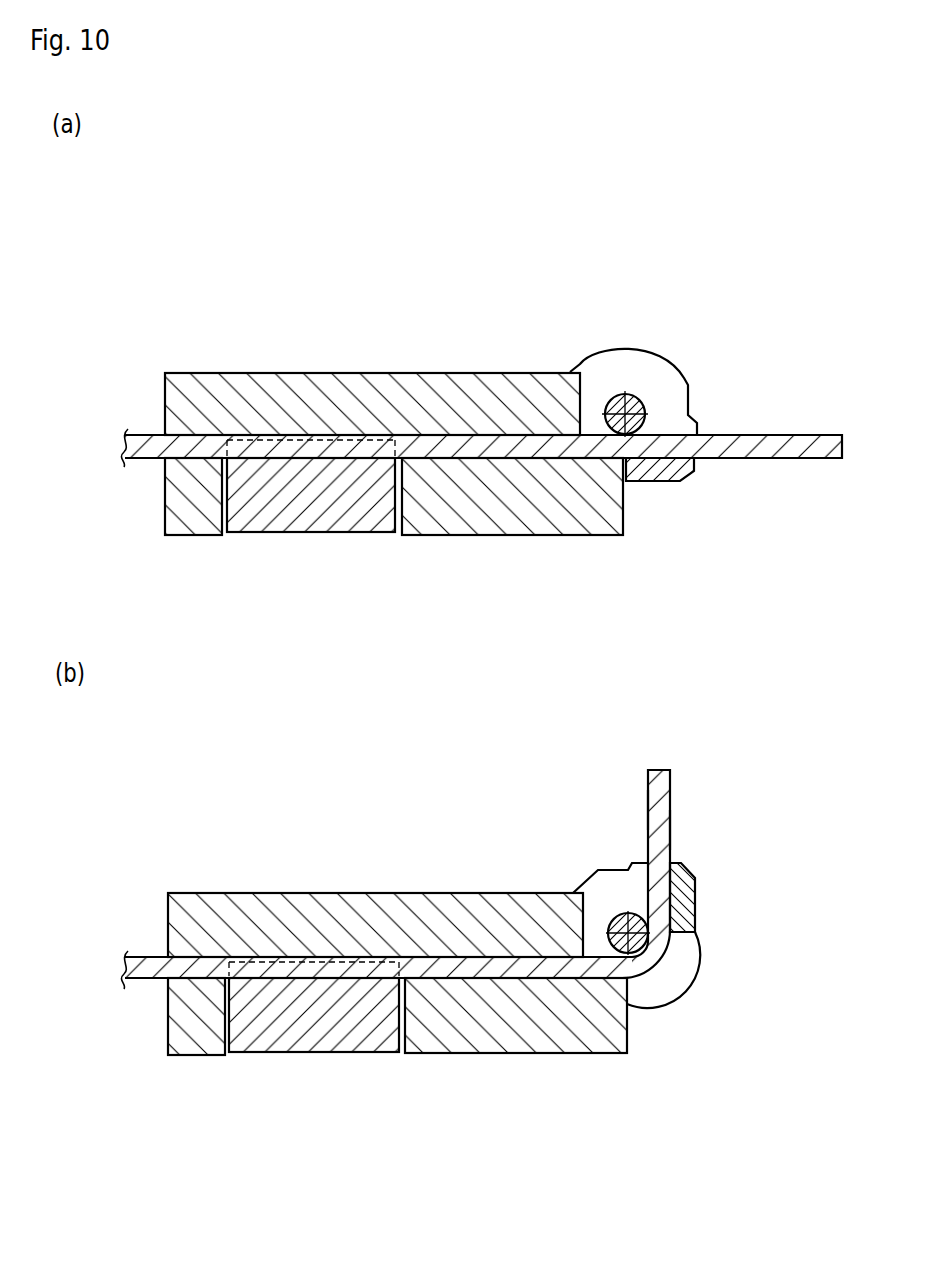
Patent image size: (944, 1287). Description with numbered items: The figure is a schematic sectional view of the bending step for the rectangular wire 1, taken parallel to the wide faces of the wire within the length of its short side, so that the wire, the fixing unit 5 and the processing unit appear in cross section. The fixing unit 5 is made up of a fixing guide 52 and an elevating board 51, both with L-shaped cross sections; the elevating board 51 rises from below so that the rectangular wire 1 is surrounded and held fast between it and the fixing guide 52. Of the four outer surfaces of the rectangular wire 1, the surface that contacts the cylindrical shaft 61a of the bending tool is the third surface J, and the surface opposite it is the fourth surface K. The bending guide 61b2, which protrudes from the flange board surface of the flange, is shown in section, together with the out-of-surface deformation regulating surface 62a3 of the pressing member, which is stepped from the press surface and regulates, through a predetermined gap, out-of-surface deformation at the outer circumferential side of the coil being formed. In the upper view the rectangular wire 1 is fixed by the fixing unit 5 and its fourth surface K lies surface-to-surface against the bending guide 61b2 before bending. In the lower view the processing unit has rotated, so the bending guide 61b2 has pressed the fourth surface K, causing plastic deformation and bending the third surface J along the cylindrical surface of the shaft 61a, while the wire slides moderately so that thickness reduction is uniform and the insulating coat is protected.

The rectangular wire 1 is at (815, 442).
The fixing unit 5 is at (395, 553).
The elevating board 51 is at (290, 515).
The fixing guide 52 is at (347, 395).
The shaft 61a is at (622, 394).
The bending guide 61b2 is at (658, 468).
The out-of-surface deformation regulating surface 62a3 is at (665, 380).
The third surface J is at (742, 432).
The fourth surface K is at (720, 460).